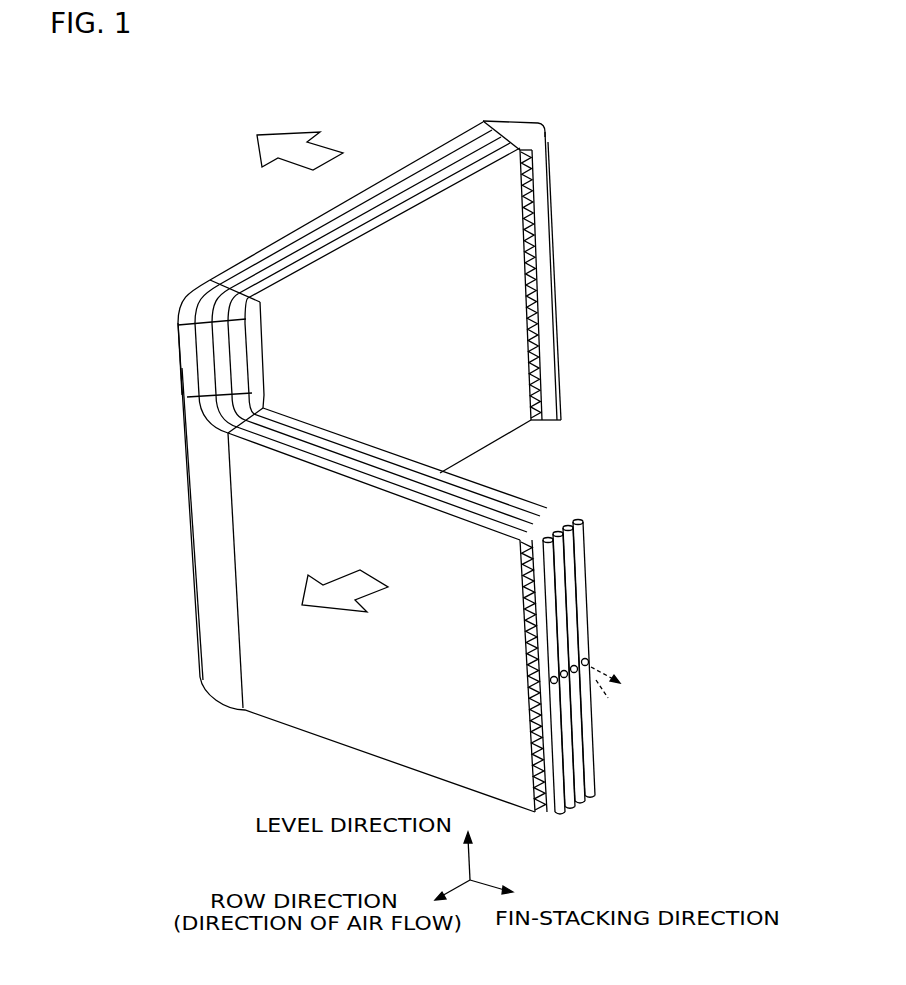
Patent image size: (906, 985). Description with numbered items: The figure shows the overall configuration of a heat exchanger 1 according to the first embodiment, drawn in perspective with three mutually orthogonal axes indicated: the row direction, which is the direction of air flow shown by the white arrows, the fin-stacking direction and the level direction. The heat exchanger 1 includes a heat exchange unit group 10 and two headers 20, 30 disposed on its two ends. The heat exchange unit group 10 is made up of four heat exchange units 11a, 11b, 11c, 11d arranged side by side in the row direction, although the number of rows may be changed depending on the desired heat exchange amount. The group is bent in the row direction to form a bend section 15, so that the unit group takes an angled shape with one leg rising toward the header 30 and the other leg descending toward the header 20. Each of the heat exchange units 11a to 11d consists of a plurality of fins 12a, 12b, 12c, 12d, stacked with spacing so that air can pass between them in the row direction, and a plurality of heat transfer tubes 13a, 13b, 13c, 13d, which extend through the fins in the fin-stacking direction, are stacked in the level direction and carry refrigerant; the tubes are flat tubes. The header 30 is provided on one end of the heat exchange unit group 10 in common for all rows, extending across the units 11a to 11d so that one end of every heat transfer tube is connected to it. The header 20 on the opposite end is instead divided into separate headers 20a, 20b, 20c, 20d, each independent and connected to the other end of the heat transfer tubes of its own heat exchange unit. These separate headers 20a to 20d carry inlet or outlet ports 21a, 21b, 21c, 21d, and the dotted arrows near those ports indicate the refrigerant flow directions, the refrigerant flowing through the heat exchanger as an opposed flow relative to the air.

The heat exchanger 1 is at (669, 114).
The heat exchange unit group 10 is at (215, 271).
The heat exchange unit 11a is at (497, 492).
The heat exchange unit 11b is at (508, 507).
The heat exchange unit 11c is at (527, 520).
The heat exchange unit 11d is at (540, 530).
The fin 12a is at (483, 160).
The fin 12b is at (462, 170).
The fin 12c is at (440, 166).
The fin 12d is at (417, 163).
The heat transfer tube 13a is at (552, 153).
The heat transfer tube 13b is at (549, 140).
The heat transfer tube 13c is at (512, 130).
The heat transfer tube 13d is at (497, 118).
The bend section 15 is at (191, 372).
The header 20 is at (607, 705).
The separate header 20a is at (630, 670).
The separate header 20b is at (579, 805).
The separate header 20c is at (569, 810).
The separate header 20d is at (553, 817).
The inlet or outlet port 21a is at (590, 662).
The inlet or outlet port 21b is at (575, 665).
The inlet or outlet port 21c is at (565, 670).
The inlet or outlet port 21d is at (555, 676).
The header 30 is at (535, 234).